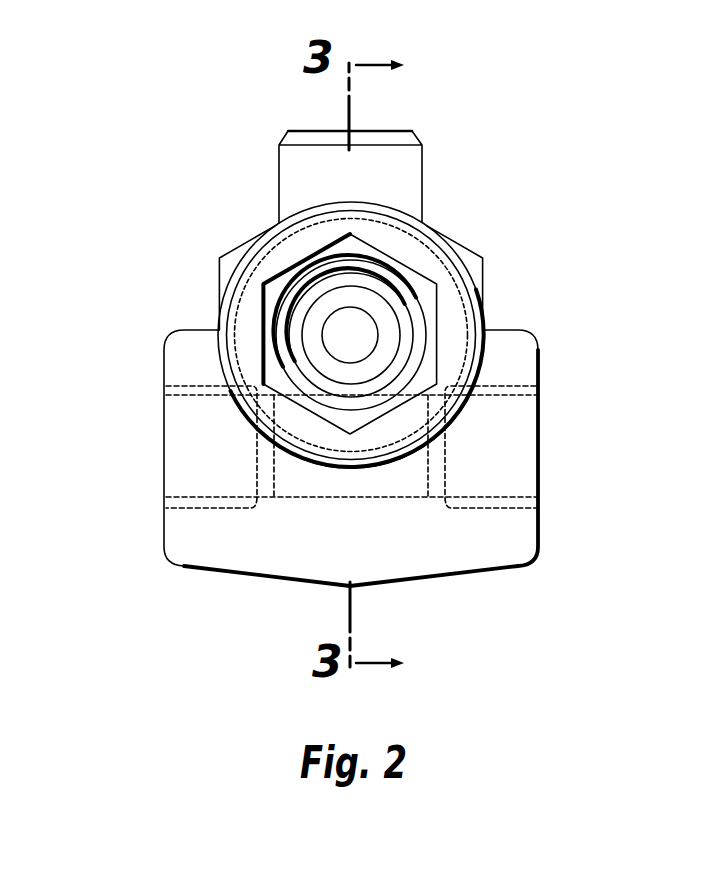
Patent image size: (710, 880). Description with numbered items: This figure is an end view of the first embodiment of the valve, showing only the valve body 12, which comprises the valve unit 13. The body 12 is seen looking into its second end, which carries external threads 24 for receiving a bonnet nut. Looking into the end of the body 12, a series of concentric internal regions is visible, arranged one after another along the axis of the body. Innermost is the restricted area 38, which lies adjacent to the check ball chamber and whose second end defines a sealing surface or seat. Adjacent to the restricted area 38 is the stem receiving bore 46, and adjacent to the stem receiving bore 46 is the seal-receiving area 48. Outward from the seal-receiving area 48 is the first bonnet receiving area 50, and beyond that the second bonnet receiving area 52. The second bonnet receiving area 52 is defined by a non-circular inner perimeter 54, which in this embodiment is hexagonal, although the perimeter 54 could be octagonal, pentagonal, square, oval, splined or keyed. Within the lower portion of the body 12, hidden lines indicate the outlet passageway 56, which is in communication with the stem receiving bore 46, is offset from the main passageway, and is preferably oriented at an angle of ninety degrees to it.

The body 12 is at (515, 328).
The valve unit 13 is at (420, 406).
The external threads 24 is at (433, 230).
The restricted area 38 is at (324, 331).
The stem receiving bore 46 is at (305, 338).
The seal-receiving area 48 is at (299, 307).
The first bonnet receiving area 50 is at (304, 277).
The second bonnet receiving area 52 is at (346, 237).
The non-circular inner perimeter 54 is at (282, 283).
The outlet passageway 56 is at (522, 458).